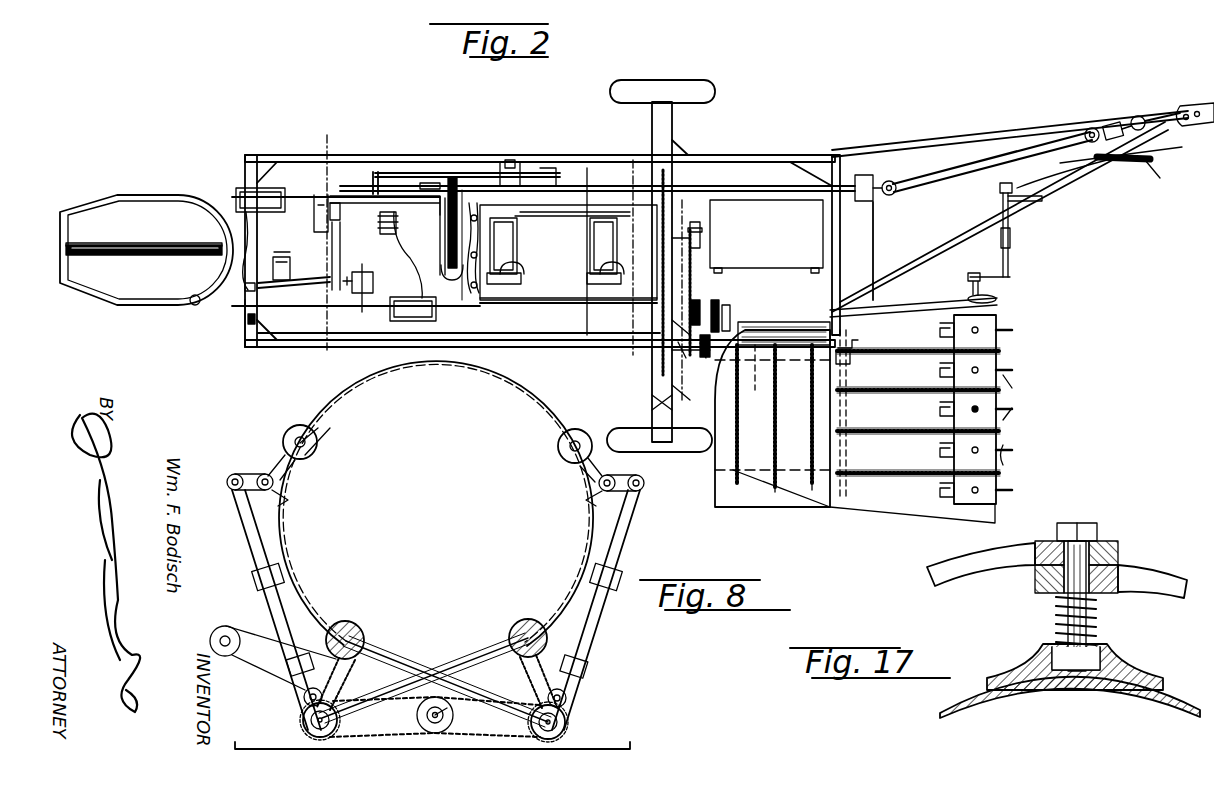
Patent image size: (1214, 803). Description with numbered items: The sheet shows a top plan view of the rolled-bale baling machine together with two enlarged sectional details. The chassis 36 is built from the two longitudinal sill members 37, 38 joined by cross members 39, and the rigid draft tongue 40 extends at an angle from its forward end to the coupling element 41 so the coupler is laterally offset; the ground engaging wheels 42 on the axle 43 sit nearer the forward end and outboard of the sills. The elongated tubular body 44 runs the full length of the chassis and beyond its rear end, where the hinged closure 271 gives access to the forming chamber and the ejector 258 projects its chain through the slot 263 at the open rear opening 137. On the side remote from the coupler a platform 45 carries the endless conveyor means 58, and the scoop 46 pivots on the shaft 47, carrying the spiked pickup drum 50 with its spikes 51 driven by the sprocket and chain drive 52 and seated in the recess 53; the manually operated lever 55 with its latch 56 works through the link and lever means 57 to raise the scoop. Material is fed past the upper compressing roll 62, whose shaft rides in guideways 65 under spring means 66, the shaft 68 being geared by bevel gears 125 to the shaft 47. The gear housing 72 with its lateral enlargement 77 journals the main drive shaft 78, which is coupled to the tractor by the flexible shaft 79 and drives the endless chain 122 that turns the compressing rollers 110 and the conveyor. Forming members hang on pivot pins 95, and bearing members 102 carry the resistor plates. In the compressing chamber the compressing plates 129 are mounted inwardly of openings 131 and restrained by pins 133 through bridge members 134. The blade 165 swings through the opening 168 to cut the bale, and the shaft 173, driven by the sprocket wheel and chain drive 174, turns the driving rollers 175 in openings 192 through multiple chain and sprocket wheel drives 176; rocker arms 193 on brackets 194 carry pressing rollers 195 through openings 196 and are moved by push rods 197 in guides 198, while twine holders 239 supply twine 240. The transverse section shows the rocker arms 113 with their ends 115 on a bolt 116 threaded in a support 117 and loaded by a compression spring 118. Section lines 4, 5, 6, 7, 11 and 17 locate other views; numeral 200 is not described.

In FIG. 2, the section line 4- 4 is at (668, 208).
In FIG. 2, the section line 5- 5 is at (668, 148).
In FIG. 2, the section line 6- 6 is at (642, 179).
In FIG. 2, the section line 7- 7 is at (600, 176).
In FIG. 2, the section line 11- 11 is at (326, 145).
In FIG. 2, the side plates 17 is at (471, 245).
In FIG. 2, the chassis 36 is at (243, 330).
In FIG. 2, the sill member 37 is at (312, 342).
In FIG. 2, the sill member 38 is at (388, 170).
In FIG. 2, the cross members 39 is at (244, 172).
In FIG. 2, the draft tongue 40 is at (1018, 125).
In FIG. 2, the coupling element 41 is at (1198, 112).
In FIG. 2, the ground engaging wheels 42 is at (712, 88).
In FIG. 2, the axle 43 is at (652, 409).
In FIG. 2, the tubular body 44 is at (540, 306).
In FIG. 17, the tubular body 44 is at (985, 708).
In FIG. 2, the platform 45 is at (835, 503).
In FIG. 2, the scoop 46 is at (925, 500).
In FIG. 2, the shaft 47 is at (850, 348).
In FIG. 2, the drum 50 is at (990, 335).
In FIG. 2, the spikes 51 is at (980, 410).
In FIG. 2, the sprocket and chain drive 52 is at (870, 480).
In FIG. 2, the recess 53 is at (935, 375).
In FIG. 2, the manually operated lever 55 is at (1131, 152).
In FIG. 2, the latch 56 is at (1164, 179).
In FIG. 2, the link and lever means 57 is at (1010, 254).
In FIG. 2, the endless conveyor means 58 is at (812, 470).
In FIG. 2, the upper compressing roll 62 is at (784, 333).
In FIG. 2, the guideways 65 is at (722, 312).
In FIG. 2, the spring means 66 is at (742, 312).
In FIG. 2, the shaft 68 is at (774, 416).
In FIG. 2, the gear housing 72 is at (858, 274).
In FIG. 2, the lateral enlargement 77 is at (878, 186).
In FIG. 2, the main drive shaft 78 is at (770, 175).
In FIG. 2, the flexible shaft 79 is at (976, 172).
In FIG. 2, the pivot pin 95 is at (333, 253).
In FIG. 2, the bearing members 102 is at (694, 300).
In FIG. 2, the compressing rollers 110 is at (506, 300).
In FIG. 17, the rocker arms 113 is at (1168, 580).
In FIG. 17, the rocker arm ends 115 is at (1116, 562).
In FIG. 17, the bolt 116 is at (1068, 611).
In FIG. 17, the support 117 is at (1125, 678).
In FIG. 17, the compression spring 118 is at (1096, 638).
In FIG. 2, the endless chain 122 is at (660, 312).
In FIG. 2, the bevel gears 125 is at (850, 376).
In FIG. 2, the compressing plates 129 is at (600, 248).
In FIG. 2, the openings 131 is at (518, 236).
In FIG. 2, the pins 133 is at (520, 270).
In FIG. 2, the bridge members 134 is at (524, 281).
In FIG. 2, the opening 137 is at (195, 306).
In FIG. 2, the blade 165 is at (468, 285).
In FIG. 2, the opening 168 is at (448, 245).
In FIG. 2, the shaft 173 is at (470, 692).
In FIG. 2, the sprocket wheel and chain drive 174 is at (410, 667).
In FIG. 2, the driving rollers 175 is at (354, 642).
In FIG. 2, the multiple chain and sprocket wheel drives 176 is at (305, 727).
In FIG. 2, the openings 192 is at (340, 620).
In FIG. 2, the rocker arms 193 is at (285, 478).
In FIG. 2, the brackets 194 is at (262, 475).
In FIG. 2, the pressing rollers 195 is at (305, 443).
In FIG. 2, the openings 196 is at (318, 428).
In FIG. 2, the push rods 197 is at (256, 556).
In FIG. 2, the guides 198 is at (266, 590).
In FIG. 2, the coil 200 is at (398, 232).
In FIG. 2, the twine holders 239 is at (270, 202).
In FIG. 2, the twine 240 is at (347, 255).
In FIG. 2, the ejector 258 is at (150, 258).
In FIG. 2, the slot 263 is at (128, 243).
In FIG. 2, the hinged closure 271 is at (790, 248).